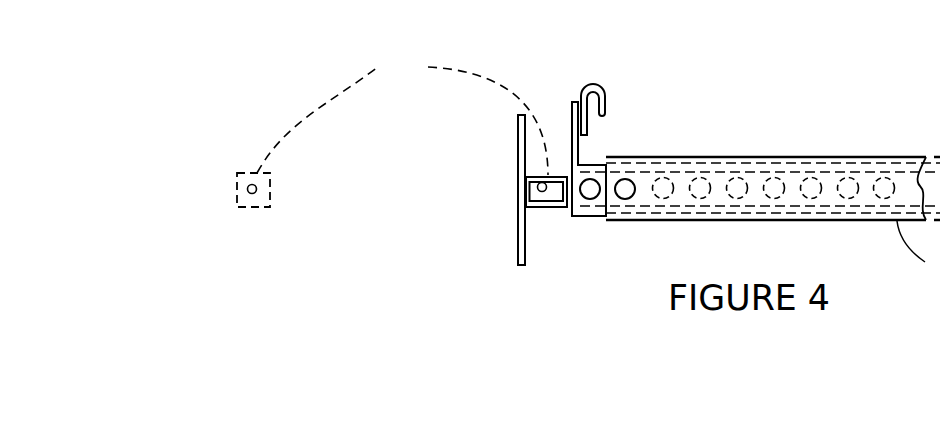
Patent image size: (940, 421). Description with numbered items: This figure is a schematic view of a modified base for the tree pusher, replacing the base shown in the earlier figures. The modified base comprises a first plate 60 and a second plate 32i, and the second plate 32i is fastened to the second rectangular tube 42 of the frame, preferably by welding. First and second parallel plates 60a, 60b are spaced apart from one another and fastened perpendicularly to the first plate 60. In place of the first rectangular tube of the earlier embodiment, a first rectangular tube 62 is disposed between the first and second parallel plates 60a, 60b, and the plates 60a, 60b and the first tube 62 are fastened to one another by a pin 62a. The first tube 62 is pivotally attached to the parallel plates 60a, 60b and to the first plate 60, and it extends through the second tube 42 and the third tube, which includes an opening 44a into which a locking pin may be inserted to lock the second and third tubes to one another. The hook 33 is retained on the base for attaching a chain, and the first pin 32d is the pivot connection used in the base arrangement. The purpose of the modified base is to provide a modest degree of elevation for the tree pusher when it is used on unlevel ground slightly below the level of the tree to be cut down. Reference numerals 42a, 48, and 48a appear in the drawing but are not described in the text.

The second plate 32i is at (572, 114).
The hook 33 is at (607, 97).
The first pin 32d is at (580, 190).
The second rectangular tube 42 is at (597, 220).
The rail holes 42a is at (808, 185).
The opening 44a is at (625, 182).
The first plate 60 is at (516, 235).
The first parallel plate 60a is at (555, 208).
The second parallel plate 60b is at (402, 115).
The first rectangular tube 62 is at (532, 209).
The pin 62a is at (538, 188).
The support 48 is at (782, 8).
The support flange 48a is at (832, 8).